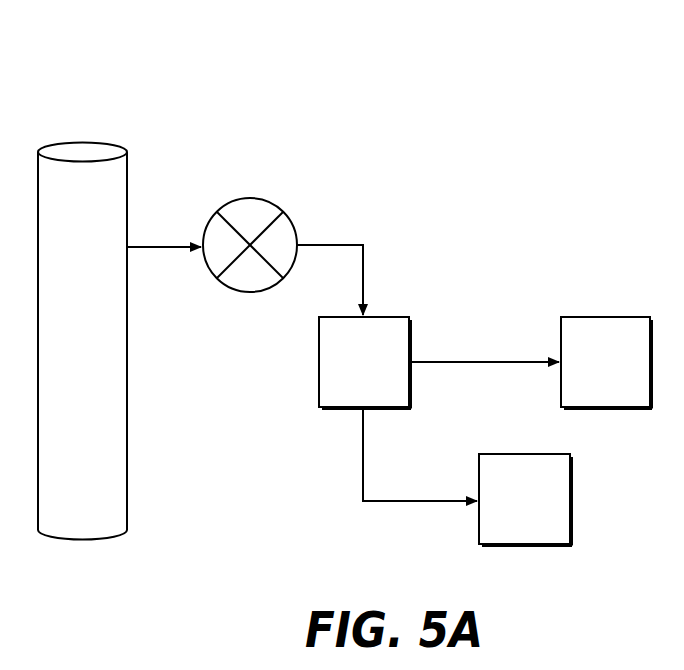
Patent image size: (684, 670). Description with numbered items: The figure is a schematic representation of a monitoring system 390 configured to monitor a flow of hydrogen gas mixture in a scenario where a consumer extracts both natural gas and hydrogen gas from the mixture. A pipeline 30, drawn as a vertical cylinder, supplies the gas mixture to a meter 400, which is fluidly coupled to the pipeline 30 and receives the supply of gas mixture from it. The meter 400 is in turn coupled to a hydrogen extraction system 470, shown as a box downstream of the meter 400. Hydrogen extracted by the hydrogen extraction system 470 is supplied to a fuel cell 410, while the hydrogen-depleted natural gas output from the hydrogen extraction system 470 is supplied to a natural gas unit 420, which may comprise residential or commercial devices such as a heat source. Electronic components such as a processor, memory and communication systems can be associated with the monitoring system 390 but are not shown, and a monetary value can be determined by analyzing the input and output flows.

The pipeline 30 is at (95, 139).
The monitoring system 390 is at (436, 96).
The meter 400 is at (264, 194).
The hydrogen extraction system 470 is at (365, 363).
The fuel cell 410 is at (606, 363).
The natural gas unit 420 is at (525, 500).